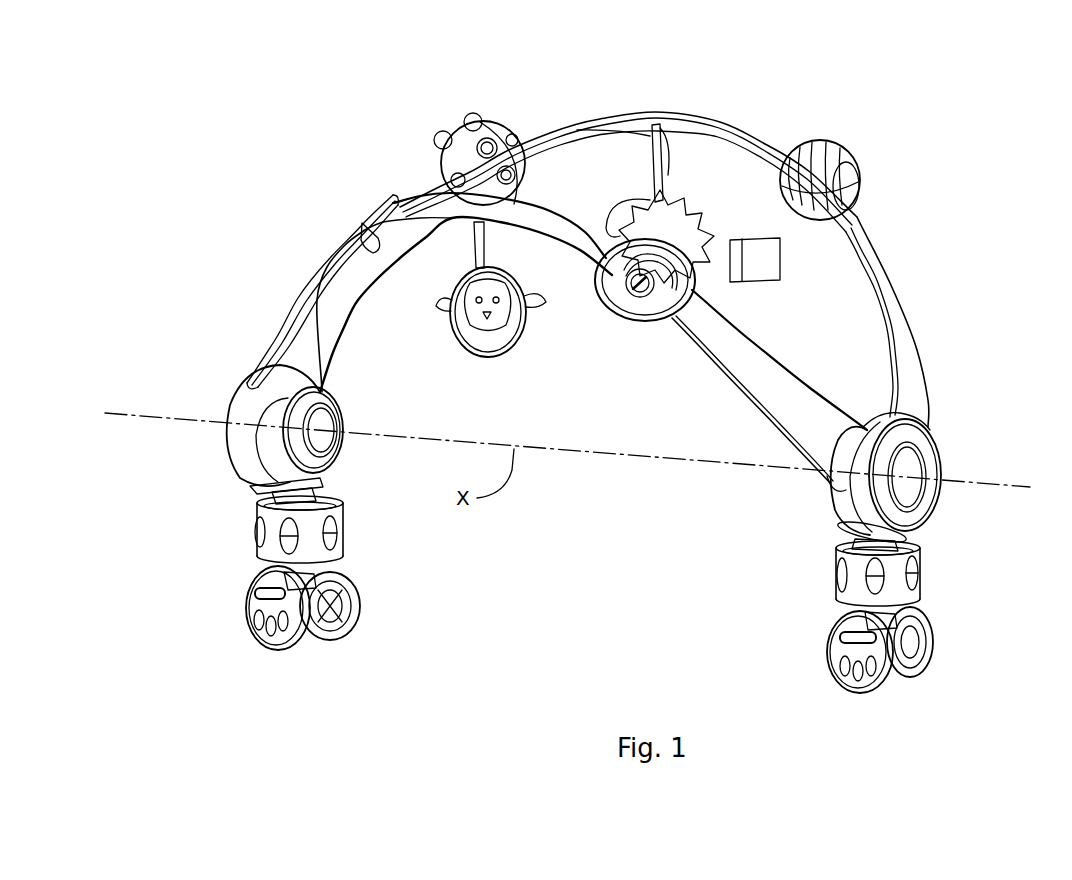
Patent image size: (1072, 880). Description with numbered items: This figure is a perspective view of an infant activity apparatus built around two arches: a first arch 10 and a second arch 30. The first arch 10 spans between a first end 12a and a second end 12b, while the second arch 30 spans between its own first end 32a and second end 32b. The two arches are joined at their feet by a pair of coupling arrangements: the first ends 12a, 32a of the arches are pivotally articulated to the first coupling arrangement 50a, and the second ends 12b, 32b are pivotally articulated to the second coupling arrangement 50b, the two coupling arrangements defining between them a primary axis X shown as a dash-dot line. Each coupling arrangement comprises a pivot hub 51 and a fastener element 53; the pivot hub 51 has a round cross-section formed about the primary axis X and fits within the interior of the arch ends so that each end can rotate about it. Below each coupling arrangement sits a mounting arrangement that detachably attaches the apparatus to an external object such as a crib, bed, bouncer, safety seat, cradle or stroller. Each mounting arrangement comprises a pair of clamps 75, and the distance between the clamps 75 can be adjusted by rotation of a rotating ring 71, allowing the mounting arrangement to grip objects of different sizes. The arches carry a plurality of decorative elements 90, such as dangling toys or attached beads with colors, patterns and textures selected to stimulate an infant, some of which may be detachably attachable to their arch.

The first arch 10 is at (942, 186).
The first end of the first arch 12a is at (838, 480).
The second end of the first arch 12b is at (308, 402).
The second arch 30 is at (917, 340).
The first end of the second arch 32a is at (876, 432).
The second end of the second arch 32b is at (243, 418).
The first coupling arrangement 50a is at (837, 537).
The second coupling arrangement 50b is at (333, 483).
The pivot hub 51 is at (927, 455).
The fastener element 53 is at (838, 510).
The rotating ring 71 is at (273, 540).
The clamps 75 is at (300, 645).
The decorative elements 90 is at (848, 158).